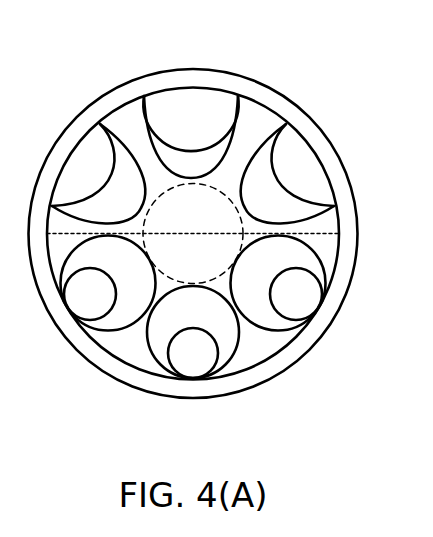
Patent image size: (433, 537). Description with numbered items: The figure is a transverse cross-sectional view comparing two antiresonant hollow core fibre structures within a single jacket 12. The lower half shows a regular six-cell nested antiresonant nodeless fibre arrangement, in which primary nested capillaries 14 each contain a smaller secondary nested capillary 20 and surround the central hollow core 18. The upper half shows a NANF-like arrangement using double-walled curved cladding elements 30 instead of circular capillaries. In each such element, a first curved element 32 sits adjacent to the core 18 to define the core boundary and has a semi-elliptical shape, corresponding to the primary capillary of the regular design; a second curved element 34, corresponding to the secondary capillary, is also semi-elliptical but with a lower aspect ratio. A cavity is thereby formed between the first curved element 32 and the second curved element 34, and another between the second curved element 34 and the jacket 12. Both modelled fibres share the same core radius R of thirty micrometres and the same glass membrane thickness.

The jacket 12 is at (334, 147).
The primary nested capillary 14 is at (231, 357).
The core 18 is at (208, 270).
The secondary nested capillary 20 is at (211, 352).
The double-walled curved cladding element 30 is at (250, 92).
The first curved element 32 is at (237, 126).
The second curved element 34 is at (218, 116).
The core radius R is at (233, 205).